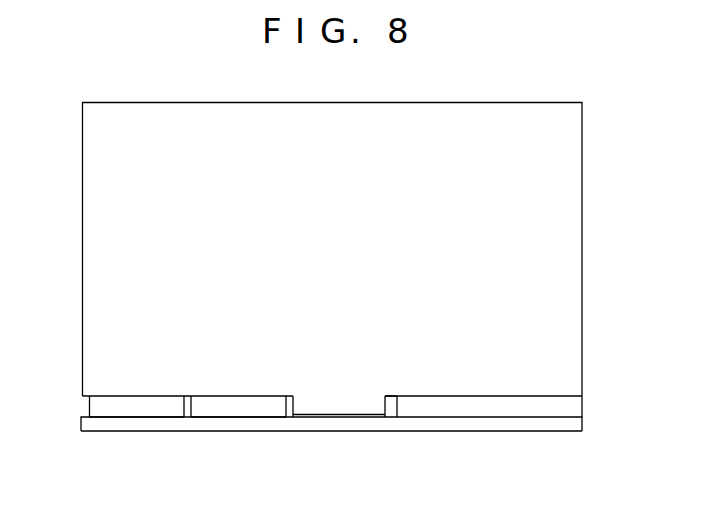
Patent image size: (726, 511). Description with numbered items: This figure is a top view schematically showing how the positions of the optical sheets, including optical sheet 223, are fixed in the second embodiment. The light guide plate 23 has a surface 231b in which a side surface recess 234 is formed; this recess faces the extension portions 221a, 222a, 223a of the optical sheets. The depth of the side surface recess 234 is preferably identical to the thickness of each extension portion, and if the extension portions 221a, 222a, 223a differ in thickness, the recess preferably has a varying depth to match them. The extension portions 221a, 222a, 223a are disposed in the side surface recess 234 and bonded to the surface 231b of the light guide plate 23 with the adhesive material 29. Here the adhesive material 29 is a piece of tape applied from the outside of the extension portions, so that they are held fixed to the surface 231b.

The optical sheet 223 is at (557, 196).
The light guide plate 23 is at (557, 408).
The extension portion 221a is at (132, 408).
The extension portion 222a is at (230, 408).
The extension portion 223a is at (323, 408).
The side surface recess 234 is at (392, 400).
The adhesive material 29 is at (479, 420).
The surface 231b is at (540, 418).